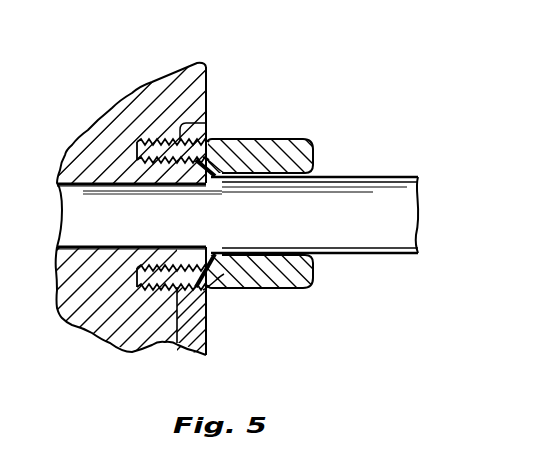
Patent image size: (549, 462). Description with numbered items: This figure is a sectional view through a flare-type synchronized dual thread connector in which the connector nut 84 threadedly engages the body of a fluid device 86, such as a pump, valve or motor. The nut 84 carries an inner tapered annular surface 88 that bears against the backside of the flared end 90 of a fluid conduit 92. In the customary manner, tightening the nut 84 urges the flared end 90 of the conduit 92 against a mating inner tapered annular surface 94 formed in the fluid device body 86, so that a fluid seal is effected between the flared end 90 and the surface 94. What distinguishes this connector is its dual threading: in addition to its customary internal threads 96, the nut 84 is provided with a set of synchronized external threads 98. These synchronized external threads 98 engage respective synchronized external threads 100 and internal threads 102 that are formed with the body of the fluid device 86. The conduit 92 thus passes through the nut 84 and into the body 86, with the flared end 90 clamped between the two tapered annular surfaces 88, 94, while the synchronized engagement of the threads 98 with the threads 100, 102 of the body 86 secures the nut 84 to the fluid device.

The connector nut 84 is at (300, 153).
The body of a fluid device 86 is at (152, 97).
The inner tapered annular surface 88 is at (193, 186).
The flared end 90 is at (233, 265).
The fluid conduit 92 is at (373, 255).
The mating inner tapered annular surface 94 is at (224, 262).
The internal threads 96 is at (155, 162).
The synchronized external threads 98 is at (198, 127).
The synchronized external threads 100 is at (107, 345).
The internal threads 102 is at (175, 348).